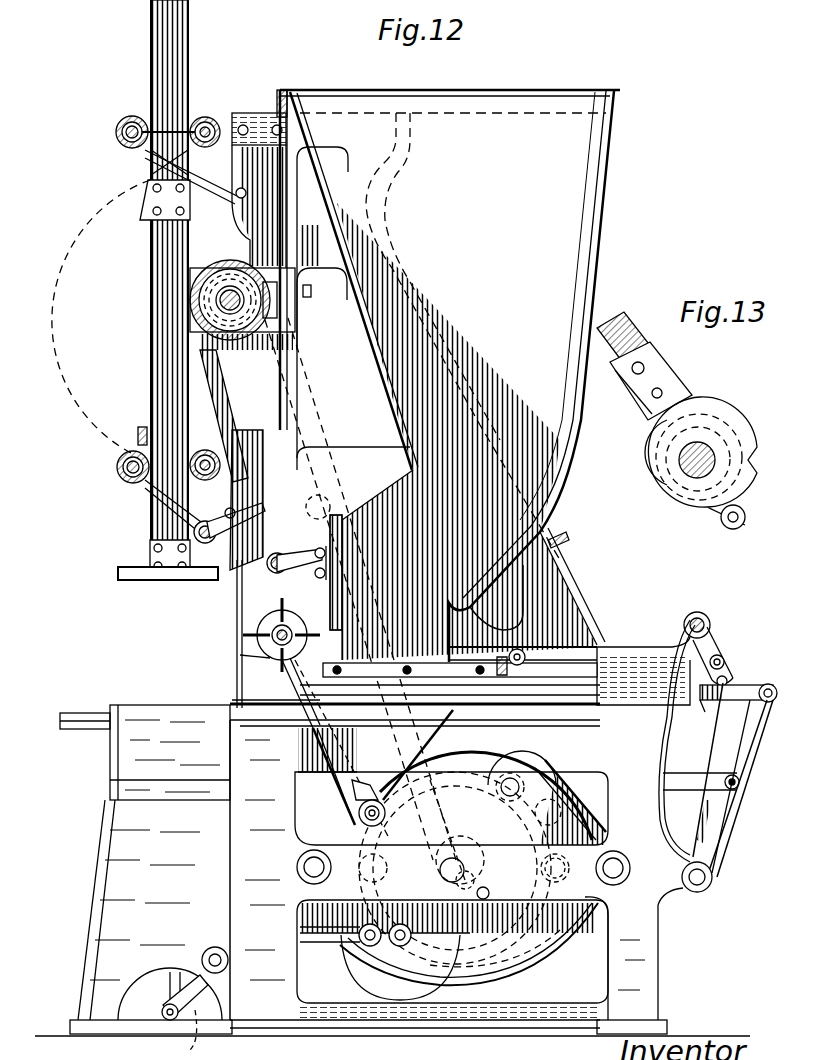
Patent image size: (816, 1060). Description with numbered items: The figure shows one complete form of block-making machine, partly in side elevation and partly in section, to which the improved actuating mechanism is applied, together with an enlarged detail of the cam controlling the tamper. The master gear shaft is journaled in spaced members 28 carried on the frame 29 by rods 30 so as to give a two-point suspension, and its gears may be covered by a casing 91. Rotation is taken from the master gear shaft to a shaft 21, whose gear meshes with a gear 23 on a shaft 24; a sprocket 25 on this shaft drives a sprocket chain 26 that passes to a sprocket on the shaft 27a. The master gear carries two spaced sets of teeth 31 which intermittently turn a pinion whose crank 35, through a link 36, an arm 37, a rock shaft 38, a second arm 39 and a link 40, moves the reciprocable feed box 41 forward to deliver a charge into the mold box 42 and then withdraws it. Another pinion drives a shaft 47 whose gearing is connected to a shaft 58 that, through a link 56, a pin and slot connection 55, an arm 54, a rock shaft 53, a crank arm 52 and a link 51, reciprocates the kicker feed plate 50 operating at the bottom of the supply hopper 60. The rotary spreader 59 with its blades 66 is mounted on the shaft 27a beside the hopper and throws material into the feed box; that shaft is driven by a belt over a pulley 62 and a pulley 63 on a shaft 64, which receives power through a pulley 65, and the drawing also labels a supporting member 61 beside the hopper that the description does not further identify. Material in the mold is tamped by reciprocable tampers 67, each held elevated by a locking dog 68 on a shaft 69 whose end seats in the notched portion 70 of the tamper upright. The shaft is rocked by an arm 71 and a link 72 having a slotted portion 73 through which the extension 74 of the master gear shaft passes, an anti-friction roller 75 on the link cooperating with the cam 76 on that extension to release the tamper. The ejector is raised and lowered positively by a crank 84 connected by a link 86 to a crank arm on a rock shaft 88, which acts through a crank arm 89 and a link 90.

In FIG. 12, the shaft 21 is at (366, 872).
In FIG. 13, the gear 23 is at (690, 402).
In FIG. 12, the shaft 24 is at (357, 818).
In FIG. 12, the sprocket 25 is at (356, 790).
In FIG. 12, the sprocket chain 26 is at (340, 790).
In FIG. 12, the shaft 27a is at (262, 648).
In FIG. 12, the spaced members 28 is at (505, 963).
In FIG. 12, the frame 29 is at (648, 972).
In FIG. 12, the rods 30 is at (312, 872).
In FIG. 12, the sets of teeth 31 is at (441, 878).
In FIG. 12, the crank 35 is at (540, 768).
In FIG. 12, the link 36 is at (700, 780).
In FIG. 12, the arm 37 is at (720, 826).
In FIG. 12, the rock shaft 38 is at (714, 879).
In FIG. 12, the arm 39 is at (752, 748).
In FIG. 12, the link 40 is at (766, 682).
In FIG. 12, the feed box 41 is at (460, 675).
In FIG. 12, the mold box 42 is at (110, 757).
In FIG. 12, the shaft 47 is at (562, 877).
In FIG. 12, the kicker feed plate 50 is at (520, 668).
In FIG. 12, the link 51 is at (581, 657).
In FIG. 12, the crank arm 52 is at (697, 613).
In FIG. 12, the rock shaft 53 is at (710, 624).
In FIG. 12, the arm 54 is at (722, 652).
In FIG. 12, the pin and slot connection 55 is at (730, 672).
In FIG. 12, the link 56 is at (565, 803).
In FIG. 12, the shaft 58 is at (600, 830).
In FIG. 12, the rotary spreader 59 is at (268, 628).
In FIG. 12, the feed or supply hopper 60 is at (560, 240).
In FIG. 12, the frame 61 is at (205, 366).
In FIG. 12, the pulley 62 is at (312, 580).
In FIG. 12, the pulley 63 is at (262, 312).
In FIG. 12, the shaft 64 is at (238, 292).
In FIG. 12, the pulley 65 is at (92, 262).
In FIG. 12, the blades or plates 66 is at (238, 656).
In FIG. 12, the tampers 67 is at (125, 566).
In FIG. 12, the locking dog 68 is at (232, 503).
In FIG. 12, the shaft 69 is at (207, 545).
In FIG. 12, the notched or shouldered portion 70 is at (165, 480).
In FIG. 12, the arm 71 is at (244, 503).
In FIG. 12, the link 72 is at (447, 758).
In FIG. 13, the link 72 is at (630, 333).
In FIG. 12, the slotted portion 73 is at (462, 830).
In FIG. 13, the extension 74 is at (690, 470).
In FIG. 12, the anti-friction roller 75 is at (490, 892).
In FIG. 13, the anti-friction roller 75 is at (734, 530).
In FIG. 12, the cam 76 is at (478, 848).
In FIG. 13, the cam 76 is at (734, 424).
In FIG. 12, the crank 84 is at (400, 980).
In FIG. 12, the link 86 is at (342, 944).
In FIG. 12, the rock shaft 88 is at (228, 962).
In FIG. 12, the crank arm 89 is at (190, 1022).
In FIG. 12, the link 90 is at (165, 985).
In FIG. 12, the casing 91 is at (548, 943).